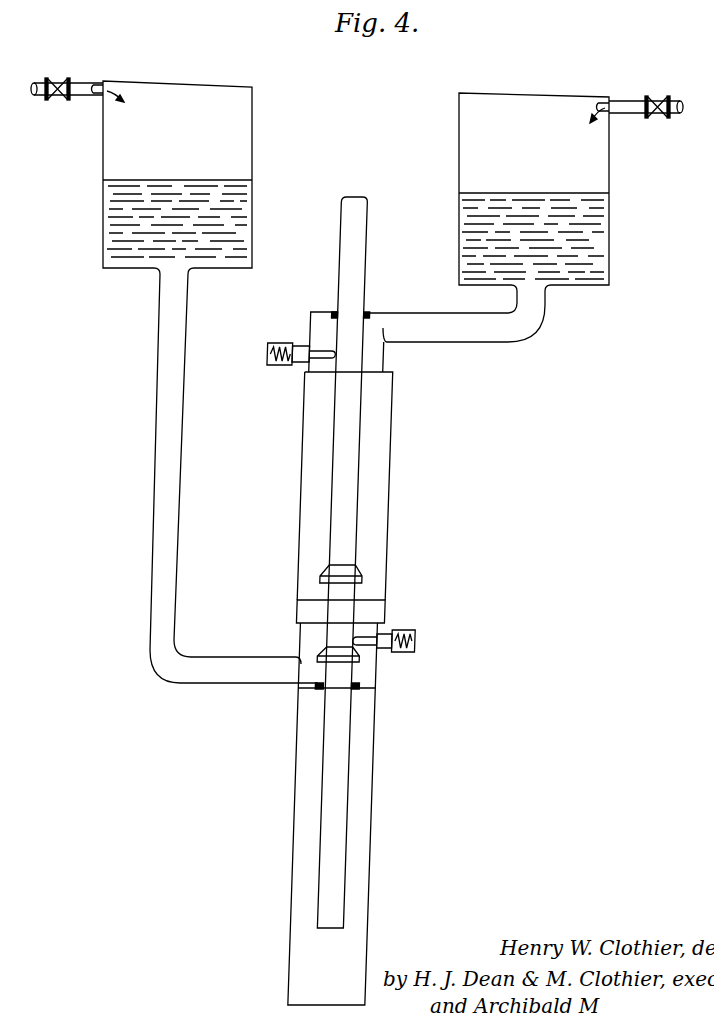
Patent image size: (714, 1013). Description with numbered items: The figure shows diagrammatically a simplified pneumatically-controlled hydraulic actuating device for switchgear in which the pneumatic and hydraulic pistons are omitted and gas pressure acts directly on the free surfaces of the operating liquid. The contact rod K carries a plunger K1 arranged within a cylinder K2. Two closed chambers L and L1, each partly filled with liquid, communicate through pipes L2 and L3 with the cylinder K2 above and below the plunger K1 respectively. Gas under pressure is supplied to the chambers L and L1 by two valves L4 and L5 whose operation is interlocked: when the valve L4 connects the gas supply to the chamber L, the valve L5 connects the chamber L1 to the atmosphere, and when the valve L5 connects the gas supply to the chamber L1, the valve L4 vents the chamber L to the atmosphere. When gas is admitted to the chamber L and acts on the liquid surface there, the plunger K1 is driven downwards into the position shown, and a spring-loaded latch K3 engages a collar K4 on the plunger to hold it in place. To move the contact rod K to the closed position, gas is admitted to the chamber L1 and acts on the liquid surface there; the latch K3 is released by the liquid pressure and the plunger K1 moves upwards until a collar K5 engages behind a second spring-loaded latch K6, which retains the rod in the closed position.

The closed chamber L is at (493, 113).
The closed chamber L1 is at (216, 113).
The pipe L2 is at (430, 328).
The pipe L3 is at (168, 335).
The valve L4 is at (650, 99).
The valve L5 is at (60, 78).
The contact rod K is at (347, 223).
The plunger K1 is at (363, 612).
The cylinder K2 is at (372, 703).
The spring-loaded latch K3 is at (413, 632).
The collar K4 is at (347, 655).
The collar K5 is at (360, 575).
The spring-loaded latch K6 is at (328, 355).